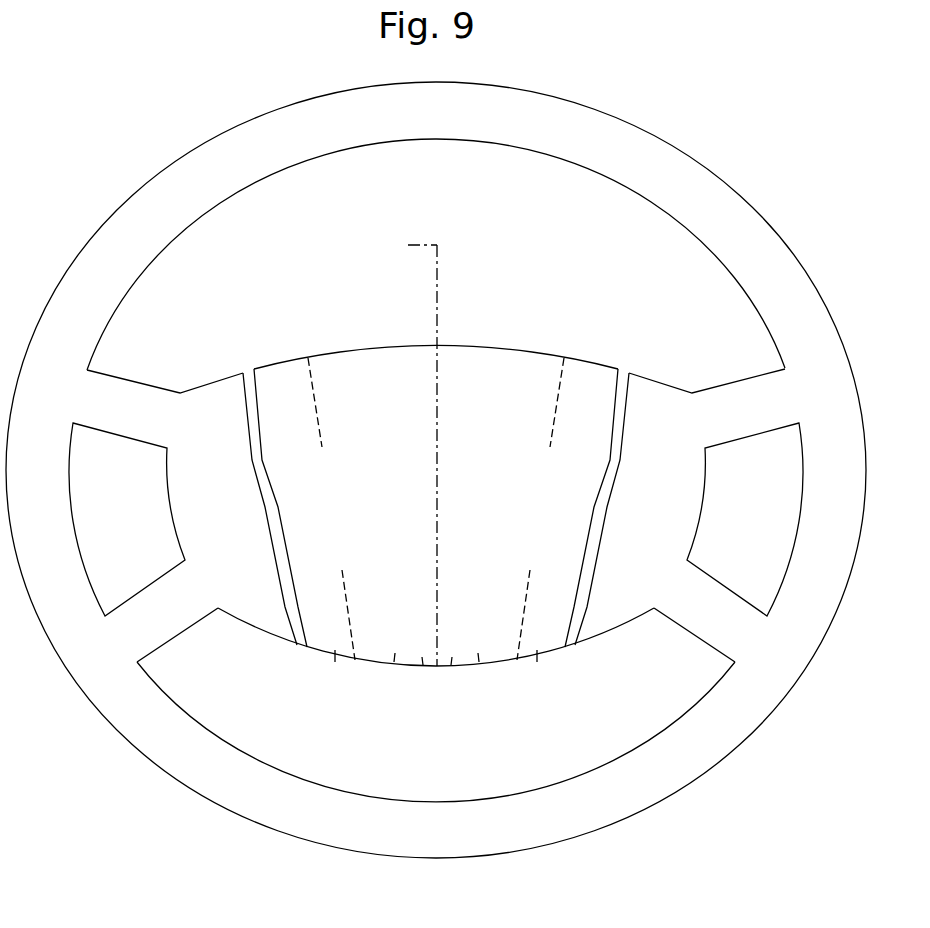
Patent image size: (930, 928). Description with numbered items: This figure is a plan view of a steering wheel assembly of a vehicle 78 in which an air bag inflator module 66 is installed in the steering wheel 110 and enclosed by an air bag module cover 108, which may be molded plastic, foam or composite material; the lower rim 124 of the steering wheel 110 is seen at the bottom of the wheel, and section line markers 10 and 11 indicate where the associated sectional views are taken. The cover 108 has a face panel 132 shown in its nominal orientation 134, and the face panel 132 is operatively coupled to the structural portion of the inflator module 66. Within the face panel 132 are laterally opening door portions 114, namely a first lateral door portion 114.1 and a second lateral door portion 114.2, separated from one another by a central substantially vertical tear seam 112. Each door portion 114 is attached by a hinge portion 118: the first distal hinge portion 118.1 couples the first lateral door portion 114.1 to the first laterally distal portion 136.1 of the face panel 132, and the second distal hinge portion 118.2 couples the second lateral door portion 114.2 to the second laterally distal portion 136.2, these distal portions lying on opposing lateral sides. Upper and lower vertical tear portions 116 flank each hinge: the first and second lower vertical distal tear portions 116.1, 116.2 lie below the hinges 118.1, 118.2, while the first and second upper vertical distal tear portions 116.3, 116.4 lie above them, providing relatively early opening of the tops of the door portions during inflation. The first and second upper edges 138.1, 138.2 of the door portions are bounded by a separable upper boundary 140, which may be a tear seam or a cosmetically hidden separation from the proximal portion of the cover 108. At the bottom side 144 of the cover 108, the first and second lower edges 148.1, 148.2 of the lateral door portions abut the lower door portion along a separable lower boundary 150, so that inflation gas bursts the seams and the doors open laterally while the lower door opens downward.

The steering wheel / section line 10- 10 is at (655, 294).
The section line 11 is at (394, 246).
The air bag inflator module 66 is at (194, 329).
The vehicle 78 is at (745, 822).
The air bag module cover 108 is at (436, 478).
The steering wheel 110 is at (738, 195).
The vertical tear seam 112 is at (439, 528).
The door portions 114 is at (400, 447).
The first lateral door portion 114.1 is at (512, 486).
The second lateral door portion 114.2 is at (407, 487).
The upper and lower vertical tear portions 116 is at (436, 509).
The first lower vertical distal tear portion 116.1 is at (525, 607).
The second lower vertical distal tear portion 116.2 is at (348, 612).
The first upper vertical distal tear portion 116.3 is at (559, 382).
The second upper vertical distal tear portion 116.4 is at (311, 382).
The hinge portion 118 is at (342, 504).
The first distal hinge portion 118.1 is at (567, 542).
The second distal hinge portion 118.2 is at (348, 544).
The lower rim 124 is at (585, 835).
The face panel 132 is at (367, 650).
The nominal orientation 134 is at (85, 183).
The first laterally distal portion 136.1 is at (592, 458).
The second laterally distal portion 136.2 is at (280, 458).
The first upper edge 138.1 is at (535, 355).
The second upper edge 138.2 is at (340, 355).
The separable upper boundary 140 is at (400, 347).
The bottom side 144 is at (249, 685).
The first lower edge 148.1 is at (479, 662).
The second lower edge 148.2 is at (394, 662).
The separable lower boundary 150 is at (451, 665).